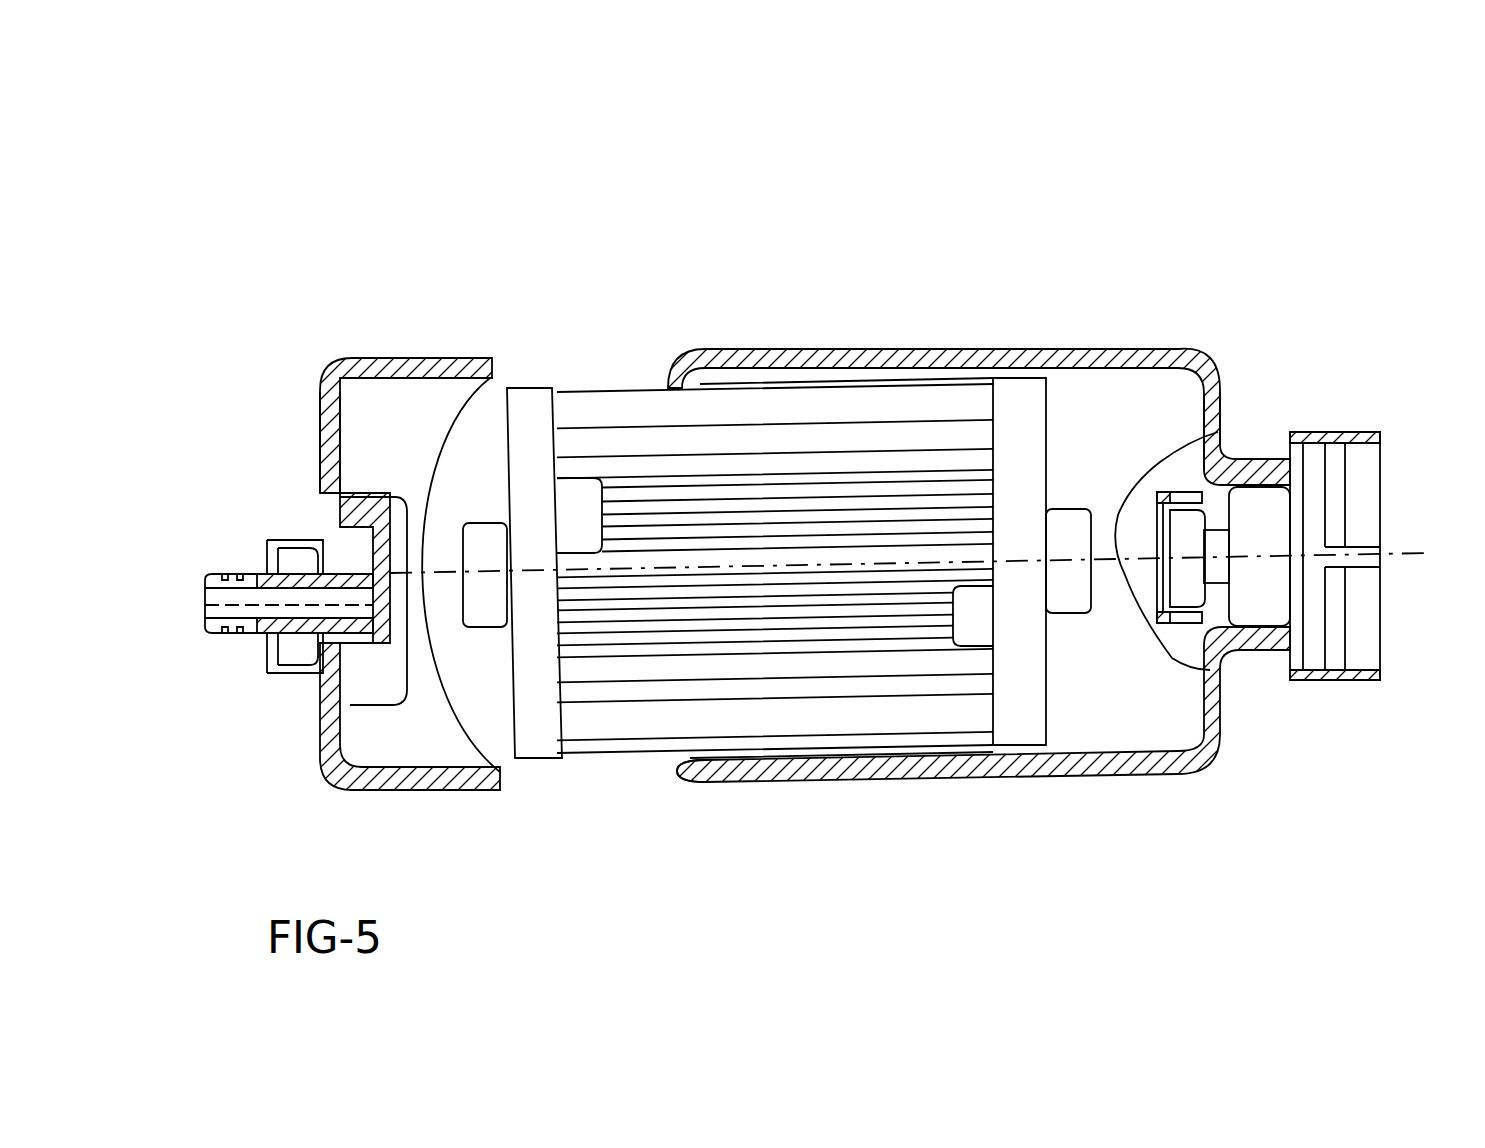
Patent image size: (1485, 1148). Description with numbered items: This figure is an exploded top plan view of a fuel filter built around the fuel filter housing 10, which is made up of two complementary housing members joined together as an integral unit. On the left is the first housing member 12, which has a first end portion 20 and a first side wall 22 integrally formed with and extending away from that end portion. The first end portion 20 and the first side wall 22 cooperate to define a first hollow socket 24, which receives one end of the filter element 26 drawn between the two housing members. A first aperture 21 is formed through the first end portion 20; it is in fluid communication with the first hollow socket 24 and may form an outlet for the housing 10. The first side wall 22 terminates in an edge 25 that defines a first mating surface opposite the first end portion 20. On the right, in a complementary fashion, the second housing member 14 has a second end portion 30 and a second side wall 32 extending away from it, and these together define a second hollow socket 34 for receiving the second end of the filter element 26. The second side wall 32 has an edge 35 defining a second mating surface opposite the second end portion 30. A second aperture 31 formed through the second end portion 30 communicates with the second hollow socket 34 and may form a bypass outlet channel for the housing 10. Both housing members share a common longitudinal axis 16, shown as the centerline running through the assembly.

The fuel filter housing 10 is at (827, 220).
The first housing member 12 is at (295, 412).
The second housing member 14 is at (1012, 332).
The longitudinal axis 16 is at (1402, 563).
The first end portion 20 is at (318, 462).
The first aperture 21 is at (208, 620).
The first side wall 22 is at (420, 350).
The first hollow socket 24 is at (412, 418).
The edge of the first side wall 25 is at (510, 778).
The filter element 26 is at (614, 383).
The second end portion 30 is at (1224, 403).
The second aperture 31 is at (1217, 575).
The second side wall 32 is at (1137, 328).
The second hollow socket 34 is at (1072, 412).
The edge of the second side wall 35 is at (690, 766).